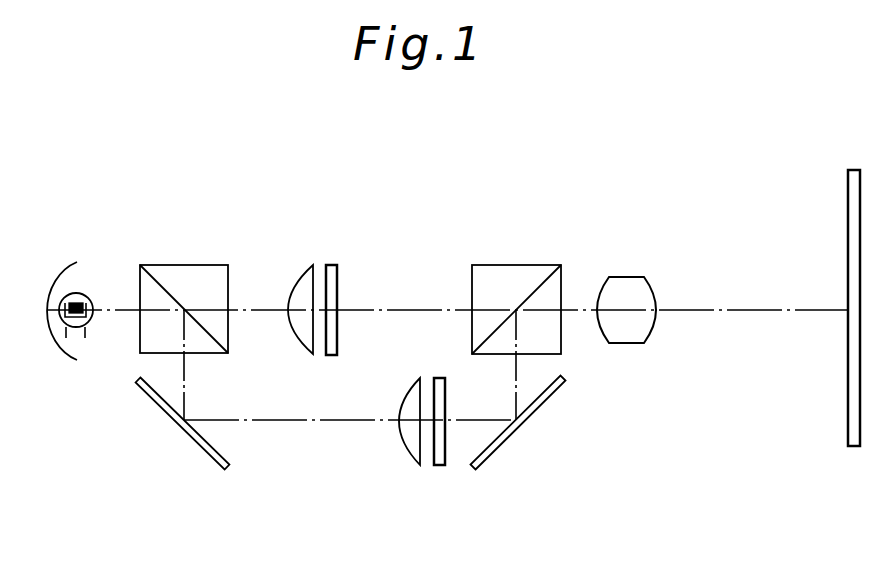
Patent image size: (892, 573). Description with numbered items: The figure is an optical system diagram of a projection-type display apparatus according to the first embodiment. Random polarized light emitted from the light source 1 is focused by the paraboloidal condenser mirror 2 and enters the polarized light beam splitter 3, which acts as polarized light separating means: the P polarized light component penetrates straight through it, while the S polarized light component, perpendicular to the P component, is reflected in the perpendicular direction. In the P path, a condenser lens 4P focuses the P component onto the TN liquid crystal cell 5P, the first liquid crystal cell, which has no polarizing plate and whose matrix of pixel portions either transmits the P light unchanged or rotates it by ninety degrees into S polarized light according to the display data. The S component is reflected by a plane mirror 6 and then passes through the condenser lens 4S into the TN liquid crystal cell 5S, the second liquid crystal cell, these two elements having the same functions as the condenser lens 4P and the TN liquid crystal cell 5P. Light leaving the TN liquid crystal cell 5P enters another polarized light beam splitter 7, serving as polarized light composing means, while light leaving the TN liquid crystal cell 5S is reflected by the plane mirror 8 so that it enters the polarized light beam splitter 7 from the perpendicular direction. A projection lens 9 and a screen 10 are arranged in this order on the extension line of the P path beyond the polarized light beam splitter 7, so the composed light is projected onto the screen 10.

The light source 1 is at (78, 298).
The paraboloidal condenser mirror 2 is at (60, 270).
The polarized light beam splitter 3 is at (192, 272).
The condenser lens 4P is at (303, 278).
The TN liquid crystal cell 5P is at (333, 268).
The plane mirror 6 is at (198, 438).
The polarized light beam splitter 7 is at (498, 273).
The plane mirror 8 is at (541, 408).
The projection lens 9 is at (627, 284).
The screen 10 is at (848, 178).
The condenser lens 4S is at (410, 437).
The TN liquid crystal cell 5S is at (443, 457).